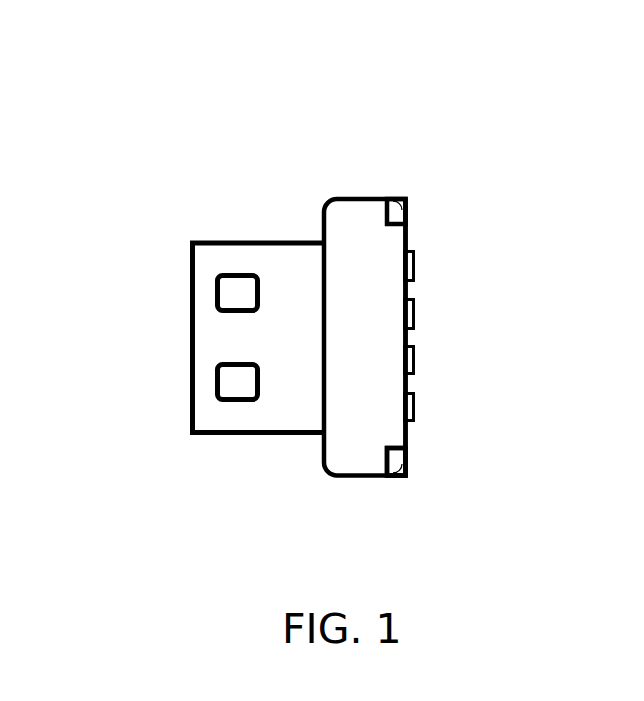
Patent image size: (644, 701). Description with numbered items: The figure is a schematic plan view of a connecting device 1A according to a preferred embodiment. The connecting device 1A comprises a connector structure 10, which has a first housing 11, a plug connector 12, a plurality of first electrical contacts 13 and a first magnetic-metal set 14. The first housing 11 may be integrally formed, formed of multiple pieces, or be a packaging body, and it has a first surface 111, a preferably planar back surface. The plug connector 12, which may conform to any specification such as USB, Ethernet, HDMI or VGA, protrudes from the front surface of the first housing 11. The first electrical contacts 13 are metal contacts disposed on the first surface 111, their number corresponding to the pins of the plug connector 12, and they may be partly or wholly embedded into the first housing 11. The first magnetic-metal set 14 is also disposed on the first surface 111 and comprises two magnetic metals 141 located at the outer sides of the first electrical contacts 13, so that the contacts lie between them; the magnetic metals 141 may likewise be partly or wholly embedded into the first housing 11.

The connecting device 1A is at (110, 36).
The connector structure 10 is at (203, 179).
The first housing 11 is at (347, 227).
The first surface 111 is at (407, 432).
The plug connector 12 is at (212, 340).
The first electrical contacts 13 is at (415, 340).
The first magnetic-metal set 14 is at (408, 478).
The magnetic metals 141 is at (395, 210).